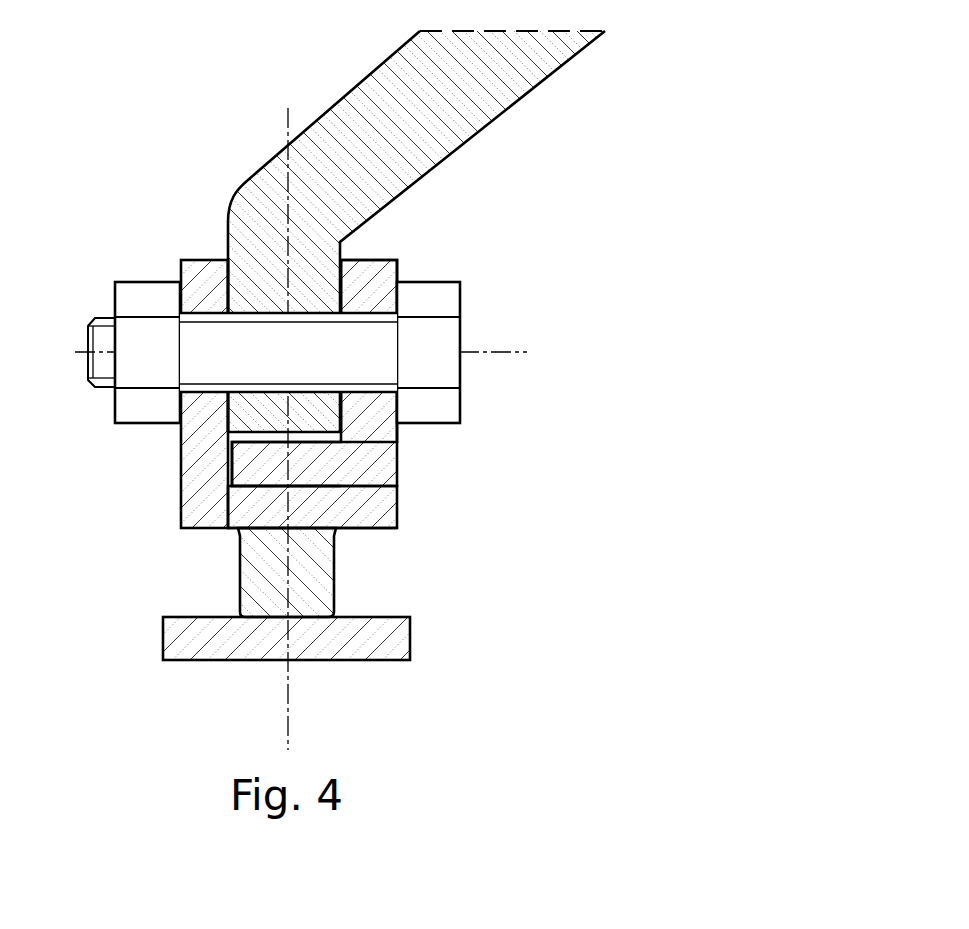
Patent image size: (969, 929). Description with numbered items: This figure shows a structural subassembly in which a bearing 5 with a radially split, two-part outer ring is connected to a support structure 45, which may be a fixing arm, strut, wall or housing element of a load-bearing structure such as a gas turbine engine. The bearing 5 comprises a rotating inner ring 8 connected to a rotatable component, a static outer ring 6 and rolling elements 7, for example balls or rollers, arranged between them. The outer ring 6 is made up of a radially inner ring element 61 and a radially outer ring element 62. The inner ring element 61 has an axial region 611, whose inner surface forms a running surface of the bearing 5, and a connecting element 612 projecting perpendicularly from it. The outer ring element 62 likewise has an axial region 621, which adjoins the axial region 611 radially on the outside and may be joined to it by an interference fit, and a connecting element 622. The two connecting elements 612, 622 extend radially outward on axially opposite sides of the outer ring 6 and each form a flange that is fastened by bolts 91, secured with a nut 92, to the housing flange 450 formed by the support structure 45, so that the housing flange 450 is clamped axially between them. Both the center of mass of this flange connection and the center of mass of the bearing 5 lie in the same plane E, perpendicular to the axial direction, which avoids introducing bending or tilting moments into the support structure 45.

The bearing 5 is at (484, 336).
The outer ring 6 is at (327, 379).
The rolling elements 7 is at (308, 567).
The inner ring 8 is at (270, 631).
The support structure 45 is at (390, 93).
The housing flange 450 is at (317, 293).
The radially inner ring element 61 is at (360, 526).
The axial region 611 is at (368, 519).
The connecting element 612 is at (198, 272).
The radially outer ring element 62 is at (334, 403).
The axial region 621 is at (262, 465).
The connecting element 622 is at (383, 278).
The bolts 91 is at (445, 330).
The bolt head nut 92 is at (130, 405).
The plane E is at (287, 685).